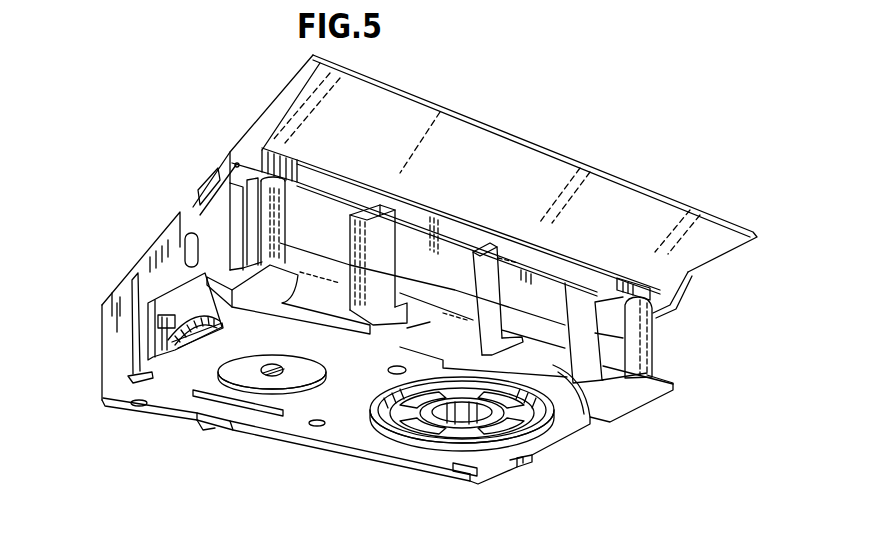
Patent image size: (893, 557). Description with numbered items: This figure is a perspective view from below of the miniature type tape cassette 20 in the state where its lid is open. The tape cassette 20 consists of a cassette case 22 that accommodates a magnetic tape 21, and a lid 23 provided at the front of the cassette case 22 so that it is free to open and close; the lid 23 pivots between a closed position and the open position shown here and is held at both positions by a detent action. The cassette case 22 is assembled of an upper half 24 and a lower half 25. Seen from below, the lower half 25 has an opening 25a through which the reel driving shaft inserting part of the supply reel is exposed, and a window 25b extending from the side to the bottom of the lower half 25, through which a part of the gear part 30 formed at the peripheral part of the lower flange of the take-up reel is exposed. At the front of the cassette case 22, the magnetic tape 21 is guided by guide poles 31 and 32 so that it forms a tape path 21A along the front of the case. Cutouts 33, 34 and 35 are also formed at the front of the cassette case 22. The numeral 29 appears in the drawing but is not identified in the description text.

The miniature type tape cassette 20 is at (541, 114).
The magnetic tape 21 is at (462, 245).
The tape path 21A is at (435, 212).
The cassette case 22 is at (136, 257).
The lid 23 is at (600, 172).
The upper half 24 is at (107, 330).
The lower half 25 is at (108, 376).
The opening 25a is at (380, 432).
The window 25b is at (180, 345).
The gear segment 29 is at (190, 345).
The gear part 30 is at (218, 337).
The guide pole 31 is at (652, 347).
The guide pole 32 is at (287, 227).
The cutout 33 is at (560, 368).
The cutout 34 is at (413, 323).
The cutout 35 is at (339, 307).